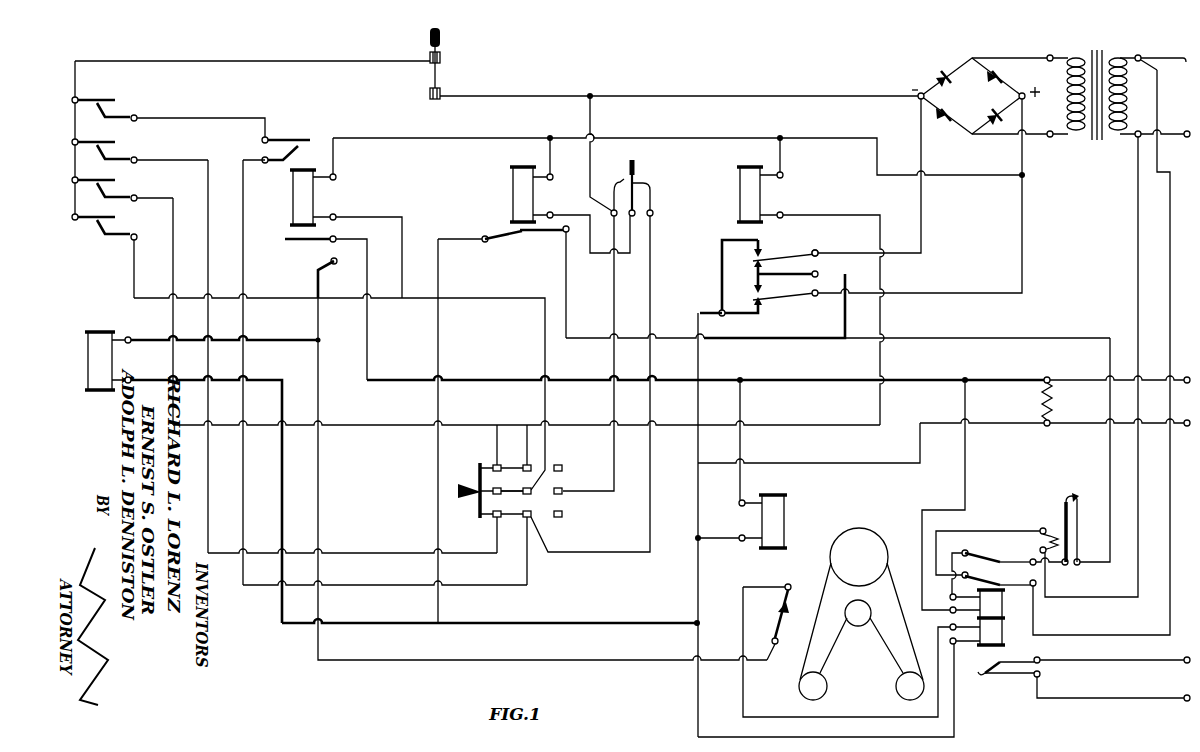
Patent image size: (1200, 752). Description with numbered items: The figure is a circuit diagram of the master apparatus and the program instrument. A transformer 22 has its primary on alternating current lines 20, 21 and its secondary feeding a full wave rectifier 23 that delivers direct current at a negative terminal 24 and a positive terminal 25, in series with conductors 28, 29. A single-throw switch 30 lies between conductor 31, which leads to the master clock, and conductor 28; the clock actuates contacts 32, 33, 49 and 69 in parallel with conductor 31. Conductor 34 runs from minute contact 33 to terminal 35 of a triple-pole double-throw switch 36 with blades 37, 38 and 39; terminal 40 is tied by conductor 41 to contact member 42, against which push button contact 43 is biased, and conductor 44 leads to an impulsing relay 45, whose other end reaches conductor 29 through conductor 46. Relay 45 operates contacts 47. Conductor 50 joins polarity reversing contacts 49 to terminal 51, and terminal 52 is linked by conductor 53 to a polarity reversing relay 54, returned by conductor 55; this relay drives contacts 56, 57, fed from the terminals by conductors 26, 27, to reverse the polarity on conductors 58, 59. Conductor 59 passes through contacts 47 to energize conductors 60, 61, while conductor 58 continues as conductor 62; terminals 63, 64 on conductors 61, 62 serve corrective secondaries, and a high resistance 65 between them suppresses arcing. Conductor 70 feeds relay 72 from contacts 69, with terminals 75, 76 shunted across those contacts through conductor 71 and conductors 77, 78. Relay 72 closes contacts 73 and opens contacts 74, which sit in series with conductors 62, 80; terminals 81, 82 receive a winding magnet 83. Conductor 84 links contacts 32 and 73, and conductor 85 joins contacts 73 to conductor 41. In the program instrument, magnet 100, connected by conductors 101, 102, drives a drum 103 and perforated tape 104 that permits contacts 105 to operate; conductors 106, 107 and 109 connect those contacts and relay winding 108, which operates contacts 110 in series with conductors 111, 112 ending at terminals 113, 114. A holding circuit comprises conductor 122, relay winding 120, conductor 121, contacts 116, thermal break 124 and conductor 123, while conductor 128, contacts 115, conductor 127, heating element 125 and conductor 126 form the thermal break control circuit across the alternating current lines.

The alternating current line 20 is at (1174, 57).
The alternating current line 21 is at (1181, 134).
The transformer 22 is at (1095, 55).
The full wave rectifier 23 is at (953, 65).
The negative terminal 24 is at (924, 88).
The positive terminal 25 is at (1029, 82).
The conductor 26 is at (922, 230).
The conductor 27 is at (1020, 226).
The conductor 28 is at (866, 90).
The conductor 29 is at (993, 175).
The single-throw switch 30 is at (437, 78).
The conductor 31 is at (285, 61).
The contacts 32 is at (104, 103).
The minute contact 33 is at (104, 145).
The conductor 34 is at (208, 250).
The terminal 35 is at (493, 518).
The triple-pole double-throw switch 36 is at (471, 482).
The blade 37 is at (524, 518).
The blade 38 is at (523, 496).
The blade 39 is at (521, 478).
The terminal 40 is at (534, 517).
The conductor 41 is at (631, 552).
The contact member 42 is at (650, 196).
The push button contact 43 is at (636, 164).
The conductor 44 is at (588, 212).
The impulsing relay 45 is at (512, 206).
The conductor 46 is at (549, 166).
The contacts 47 is at (526, 238).
The polarity reversing contacts 49 is at (104, 183).
The conductor 50 is at (173, 250).
The terminal 51 is at (494, 462).
The terminal 52 is at (525, 462).
The conductor 53 is at (704, 424).
The polarity reversing relay 54 is at (742, 198).
The conductor 55 is at (778, 169).
The contacts 56 is at (760, 256).
The contacts 57 is at (760, 300).
The conductor 58 is at (742, 312).
The conductor 59 is at (763, 337).
The conductor 60 is at (438, 349).
The conductor 61 is at (558, 622).
The conductor 62 is at (831, 380).
The terminal 63 is at (1185, 427).
The terminal 64 is at (1185, 376).
The high resistance 65 is at (1052, 414).
The contacts 69 is at (104, 221).
The conductor 70 is at (385, 218).
The conductor 71 is at (500, 296).
The relay 72 is at (292, 206).
The contacts 73 is at (300, 150).
The contacts 74 is at (307, 250).
The terminal 75 is at (532, 494).
The terminal 76 is at (562, 487).
The conductor 77 is at (614, 468).
The conductor 78 is at (590, 182).
The conductor 80 is at (298, 339).
The terminal 81 is at (130, 337).
The terminal 82 is at (130, 383).
The winding magnet 83 is at (88, 368).
The conductor 84 is at (236, 114).
The conductor 85 is at (243, 494).
The magnet 100 is at (784, 531).
The conductor 101 is at (700, 538).
The conductor 102 is at (741, 458).
The drum 103 is at (885, 540).
The tape 104 is at (826, 584).
The contacts 105 is at (784, 608).
The conductor 106 is at (468, 655).
The conductor 107 is at (880, 716).
The relay winding 108 is at (1003, 644).
The conductor 109 is at (954, 738).
The contacts 110 is at (984, 672).
The conductor 111 is at (1114, 698).
The conductor 112 is at (1116, 661).
The terminal 113 is at (1186, 700).
The terminal 114 is at (1185, 648).
The contacts 115 is at (990, 582).
The contacts 116 is at (986, 558).
The relay winding 120 is at (1003, 617).
The conductor 121 is at (974, 552).
The conductor 122 is at (965, 488).
The conductor 123 is at (1109, 470).
The thermal break 124 is at (1078, 552).
The heating element 125 is at (1054, 528).
The conductor 126 is at (1139, 490).
The conductor 127 is at (1011, 530).
The conductor 128 is at (1168, 525).